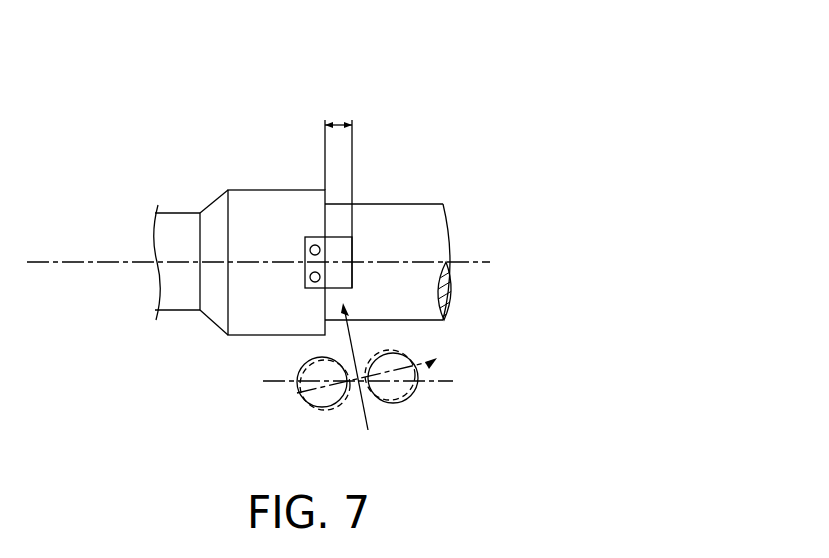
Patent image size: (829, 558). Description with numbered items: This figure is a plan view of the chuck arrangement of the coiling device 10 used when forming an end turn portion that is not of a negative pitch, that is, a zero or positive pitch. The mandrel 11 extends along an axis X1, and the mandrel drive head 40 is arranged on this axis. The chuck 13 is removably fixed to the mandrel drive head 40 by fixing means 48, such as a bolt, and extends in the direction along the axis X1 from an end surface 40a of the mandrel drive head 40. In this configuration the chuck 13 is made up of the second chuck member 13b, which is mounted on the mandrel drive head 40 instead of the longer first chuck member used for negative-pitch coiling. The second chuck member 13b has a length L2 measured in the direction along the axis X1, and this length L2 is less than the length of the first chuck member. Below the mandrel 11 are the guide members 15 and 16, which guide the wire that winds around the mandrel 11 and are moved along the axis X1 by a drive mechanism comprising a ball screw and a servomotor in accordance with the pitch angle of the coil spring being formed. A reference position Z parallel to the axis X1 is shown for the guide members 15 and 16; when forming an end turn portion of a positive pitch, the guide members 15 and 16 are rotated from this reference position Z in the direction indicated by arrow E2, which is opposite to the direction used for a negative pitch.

The spindle device 10 is at (428, 58).
The mandrel 11 is at (418, 204).
The chuck 13 is at (378, 230).
The second chuck member 13b is at (352, 250).
The guide member 15 is at (298, 372).
The guide member 16 is at (402, 405).
The mandrel drive head 40 is at (244, 188).
The end surface 40a is at (323, 233).
The fixing means 48 is at (308, 276).
The length L2 is at (338, 122).
The axis X1 is at (62, 260).
The reference position Z is at (438, 366).
The arrow E2 is at (284, 400).